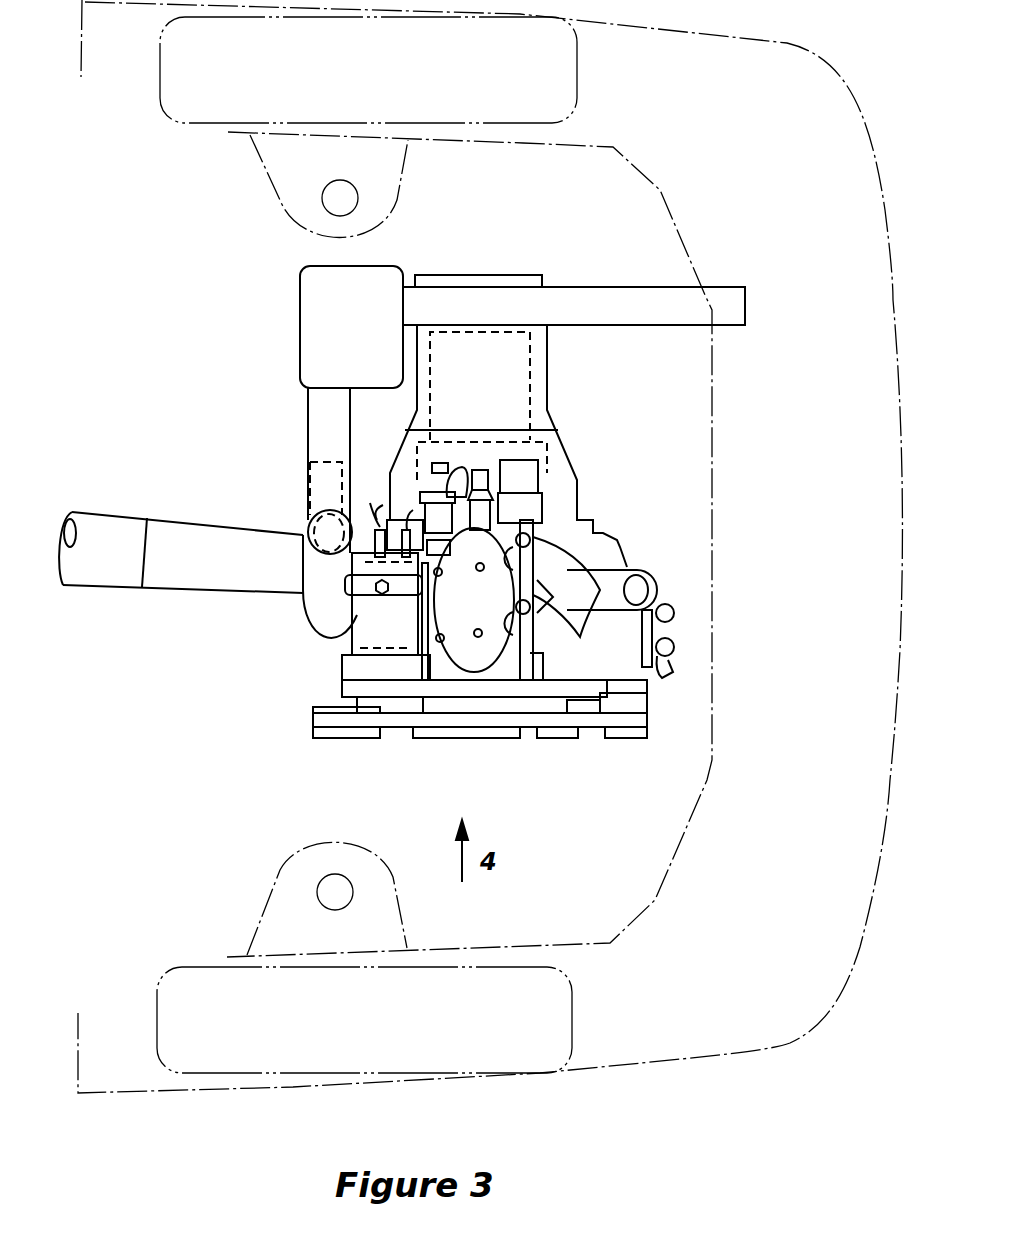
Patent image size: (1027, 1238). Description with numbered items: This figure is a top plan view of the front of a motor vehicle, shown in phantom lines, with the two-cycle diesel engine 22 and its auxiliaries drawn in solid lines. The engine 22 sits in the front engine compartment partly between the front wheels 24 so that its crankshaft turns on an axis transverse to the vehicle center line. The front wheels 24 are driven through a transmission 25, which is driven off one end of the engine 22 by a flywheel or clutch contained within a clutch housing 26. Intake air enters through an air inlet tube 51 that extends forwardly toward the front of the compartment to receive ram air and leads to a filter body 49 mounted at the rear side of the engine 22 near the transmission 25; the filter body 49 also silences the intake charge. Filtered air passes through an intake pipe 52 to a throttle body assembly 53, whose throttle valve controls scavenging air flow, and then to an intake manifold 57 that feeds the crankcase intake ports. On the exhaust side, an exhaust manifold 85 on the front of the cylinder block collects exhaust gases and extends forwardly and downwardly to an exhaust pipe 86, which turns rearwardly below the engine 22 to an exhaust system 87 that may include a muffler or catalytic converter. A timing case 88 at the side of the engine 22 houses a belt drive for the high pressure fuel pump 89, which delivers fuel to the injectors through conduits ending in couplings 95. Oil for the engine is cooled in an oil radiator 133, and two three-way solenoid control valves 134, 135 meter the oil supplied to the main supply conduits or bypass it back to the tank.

The engine 22 is at (471, 660).
The front wheels 24 is at (163, 118).
The transmission 25 is at (550, 410).
The clutch housing 26 is at (540, 375).
The filter body 49 is at (300, 320).
The air inlet tube 51 is at (613, 285).
The intake pipe 52 is at (307, 393).
The throttle body assembly 53 is at (318, 458).
The intake manifold 57 is at (340, 648).
The exhaust manifold 85 is at (603, 577).
The exhaust pipe 86 is at (657, 575).
The exhaust system 87 is at (172, 530).
The timing case 88 is at (333, 700).
The high pressure fuel pump 89 is at (335, 632).
The couplings 95 is at (571, 605).
The oil radiator 133 is at (652, 633).
The three-way solenoid control valve 134 is at (675, 650).
The three-way solenoid control valve 135 is at (674, 613).